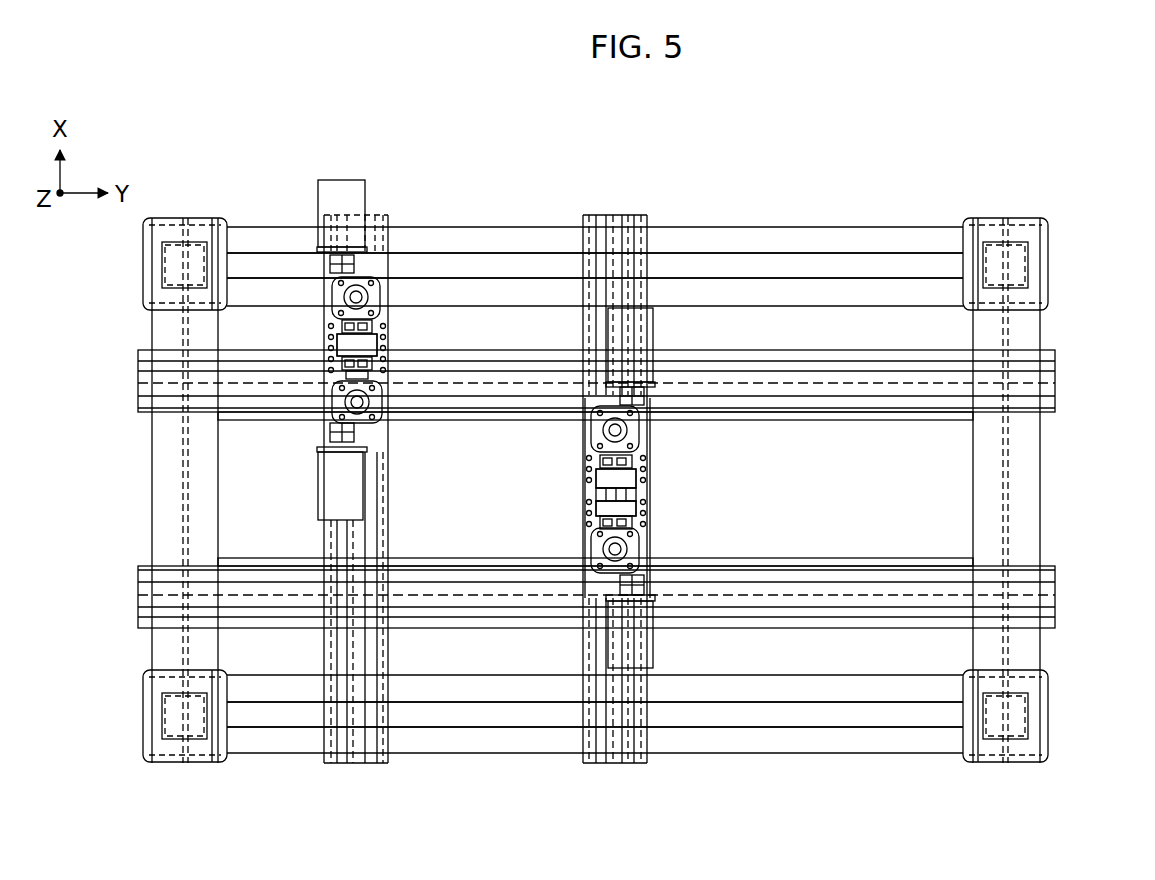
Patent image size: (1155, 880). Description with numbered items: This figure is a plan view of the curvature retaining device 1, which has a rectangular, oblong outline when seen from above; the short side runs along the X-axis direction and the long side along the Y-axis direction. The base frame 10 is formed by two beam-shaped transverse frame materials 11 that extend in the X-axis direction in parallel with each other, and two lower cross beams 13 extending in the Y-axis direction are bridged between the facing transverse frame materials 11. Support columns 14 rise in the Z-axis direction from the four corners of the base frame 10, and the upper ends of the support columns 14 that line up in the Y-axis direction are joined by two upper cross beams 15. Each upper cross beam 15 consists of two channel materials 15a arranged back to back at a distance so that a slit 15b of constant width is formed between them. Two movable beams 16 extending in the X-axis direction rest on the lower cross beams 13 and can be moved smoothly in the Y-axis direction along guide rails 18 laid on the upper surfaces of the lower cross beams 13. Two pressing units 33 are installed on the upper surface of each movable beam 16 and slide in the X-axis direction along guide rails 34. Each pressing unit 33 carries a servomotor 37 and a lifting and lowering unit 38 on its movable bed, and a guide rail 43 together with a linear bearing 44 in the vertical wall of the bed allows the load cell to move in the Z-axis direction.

The curvature retaining device 1 is at (540, 196).
The base frame 10 is at (145, 457).
The transverse frame material 11 is at (152, 518).
The lower cross beam 13 is at (470, 561).
The support column 14 is at (143, 267).
The upper cross beam 15 is at (860, 164).
The channel material 15a is at (720, 236).
The slit 15b is at (772, 256).
The movable beam 16 is at (583, 323).
The guide rail 18 is at (878, 401).
The pressing unit 33 is at (396, 208).
The guide rail 34 is at (381, 526).
The servomotor 37 is at (318, 193).
The lifting and lowering unit 38 is at (385, 438).
The guide rail 43 is at (388, 323).
The linear bearing 44 is at (537, 426).